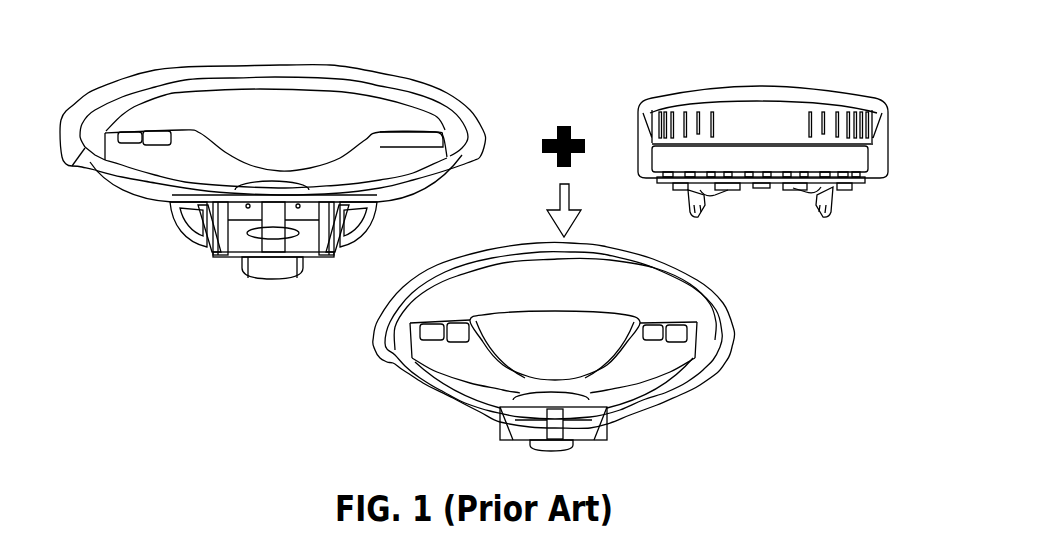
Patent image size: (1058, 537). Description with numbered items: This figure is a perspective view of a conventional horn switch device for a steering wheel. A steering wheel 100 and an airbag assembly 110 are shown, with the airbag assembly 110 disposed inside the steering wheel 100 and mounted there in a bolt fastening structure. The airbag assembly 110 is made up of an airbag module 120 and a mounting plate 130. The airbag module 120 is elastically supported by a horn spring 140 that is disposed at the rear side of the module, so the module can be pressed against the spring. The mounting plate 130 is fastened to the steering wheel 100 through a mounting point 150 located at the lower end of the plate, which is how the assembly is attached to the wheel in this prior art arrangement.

The steering wheel 100 is at (418, 95).
The airbag assembly 110 is at (605, 318).
The airbag module 120 is at (780, 123).
The mounting plate 130 is at (827, 183).
The horn spring 140 is at (790, 190).
The mounting point 150 is at (830, 217).